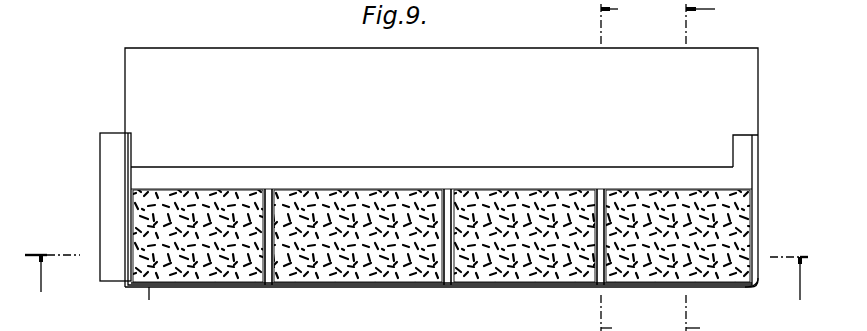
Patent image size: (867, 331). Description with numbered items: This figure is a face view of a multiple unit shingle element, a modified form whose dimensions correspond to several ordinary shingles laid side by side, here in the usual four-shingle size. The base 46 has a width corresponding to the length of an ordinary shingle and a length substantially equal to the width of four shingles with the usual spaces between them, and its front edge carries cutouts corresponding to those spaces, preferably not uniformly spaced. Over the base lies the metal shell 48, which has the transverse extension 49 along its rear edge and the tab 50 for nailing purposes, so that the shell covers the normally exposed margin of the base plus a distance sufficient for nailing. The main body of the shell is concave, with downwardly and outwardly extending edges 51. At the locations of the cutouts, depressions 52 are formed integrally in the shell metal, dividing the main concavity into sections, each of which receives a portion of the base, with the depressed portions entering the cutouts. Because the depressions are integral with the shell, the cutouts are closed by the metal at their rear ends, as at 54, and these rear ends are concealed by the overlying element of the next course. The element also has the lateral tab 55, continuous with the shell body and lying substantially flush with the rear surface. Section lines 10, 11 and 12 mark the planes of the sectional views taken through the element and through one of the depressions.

The section line 10- 10 is at (427, 277).
The section line 11- 11 is at (708, 167).
The section line 12- 12 is at (625, 167).
The base 46 is at (718, 100).
The metal shell 48 is at (718, 218).
The transverse extension 49 is at (540, 166).
The tab 50 is at (750, 157).
The downwardly and outwardly extending edges 51 is at (752, 290).
The depressions 52 is at (264, 268).
The rear end of depression 54 is at (272, 190).
The lateral tab 55 is at (107, 170).